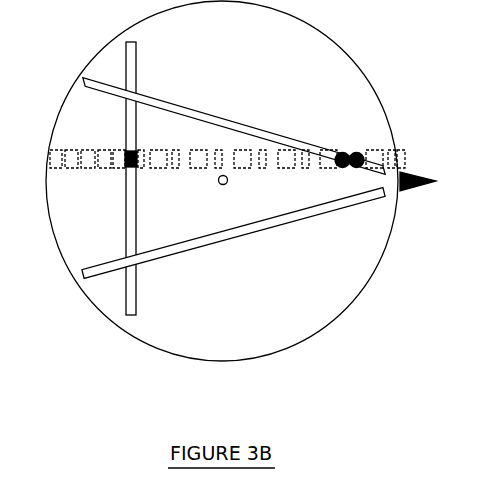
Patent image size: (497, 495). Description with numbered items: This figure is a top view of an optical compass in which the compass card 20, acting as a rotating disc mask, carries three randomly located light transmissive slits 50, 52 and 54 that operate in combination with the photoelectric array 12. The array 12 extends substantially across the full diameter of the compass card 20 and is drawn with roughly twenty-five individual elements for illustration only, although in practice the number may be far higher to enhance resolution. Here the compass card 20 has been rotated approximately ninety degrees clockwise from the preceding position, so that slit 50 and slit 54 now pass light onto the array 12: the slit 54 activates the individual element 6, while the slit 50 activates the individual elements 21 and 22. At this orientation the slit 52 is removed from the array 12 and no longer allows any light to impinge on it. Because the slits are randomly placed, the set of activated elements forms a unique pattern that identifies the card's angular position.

The individual element 6 is at (130, 167).
The photoelectric array 12 is at (75, 150).
The compass card 20 is at (287, 333).
The individual element 21 is at (344, 152).
The individual element 22 is at (356, 152).
The light transmissive slit 50 is at (208, 109).
The light transmissive slit 52 is at (221, 242).
The light transmissive slit 54 is at (126, 235).